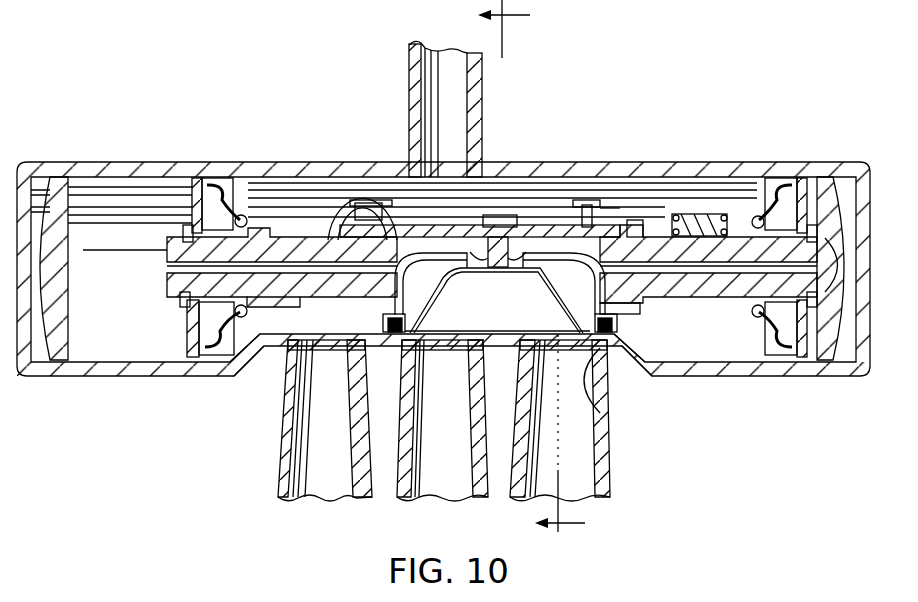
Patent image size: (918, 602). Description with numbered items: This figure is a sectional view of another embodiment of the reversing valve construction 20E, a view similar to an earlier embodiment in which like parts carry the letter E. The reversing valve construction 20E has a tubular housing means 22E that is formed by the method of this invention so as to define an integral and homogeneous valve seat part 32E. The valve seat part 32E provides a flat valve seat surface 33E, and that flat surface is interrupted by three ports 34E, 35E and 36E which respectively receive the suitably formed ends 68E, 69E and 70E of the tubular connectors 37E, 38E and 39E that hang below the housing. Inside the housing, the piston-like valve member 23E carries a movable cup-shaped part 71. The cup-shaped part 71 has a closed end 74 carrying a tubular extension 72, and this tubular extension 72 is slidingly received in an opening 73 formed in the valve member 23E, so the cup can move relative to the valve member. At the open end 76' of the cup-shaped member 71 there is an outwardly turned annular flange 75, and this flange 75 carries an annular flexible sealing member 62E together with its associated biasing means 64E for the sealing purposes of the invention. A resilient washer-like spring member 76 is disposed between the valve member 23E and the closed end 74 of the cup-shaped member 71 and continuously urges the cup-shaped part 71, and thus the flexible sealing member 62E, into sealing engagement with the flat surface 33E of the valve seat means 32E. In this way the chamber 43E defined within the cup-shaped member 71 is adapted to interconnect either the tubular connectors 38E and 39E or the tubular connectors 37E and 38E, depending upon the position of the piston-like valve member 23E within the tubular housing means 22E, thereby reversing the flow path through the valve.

The reversing valve construction 20E is at (697, 107).
The tubular housing means 22E is at (148, 161).
The valve member 23E is at (289, 237).
The valve seat part 32E is at (625, 337).
The flat valve seat surface 33E is at (270, 348).
The port 34E is at (293, 343).
The port 35E is at (432, 341).
The port 36E is at (603, 418).
The tubular connector 37E is at (283, 455).
The tubular connector 38E is at (388, 480).
The tubular connector 39E is at (607, 472).
The chamber 43E is at (543, 260).
The annular flexible sealing member 62E is at (612, 348).
The biasing means 64E is at (620, 327).
The formed end 68E is at (312, 328).
The formed end 69E is at (417, 333).
The formed end 70E is at (580, 318).
The cup-shaped part 71 is at (448, 276).
The tubular extension 72 is at (482, 256).
The opening 73 is at (497, 258).
The closed end 74 is at (512, 272).
The outwardly turned annular flange 75 is at (390, 320).
The resilient washer-like spring member 76 is at (545, 191).
The open end 76' is at (497, 418).